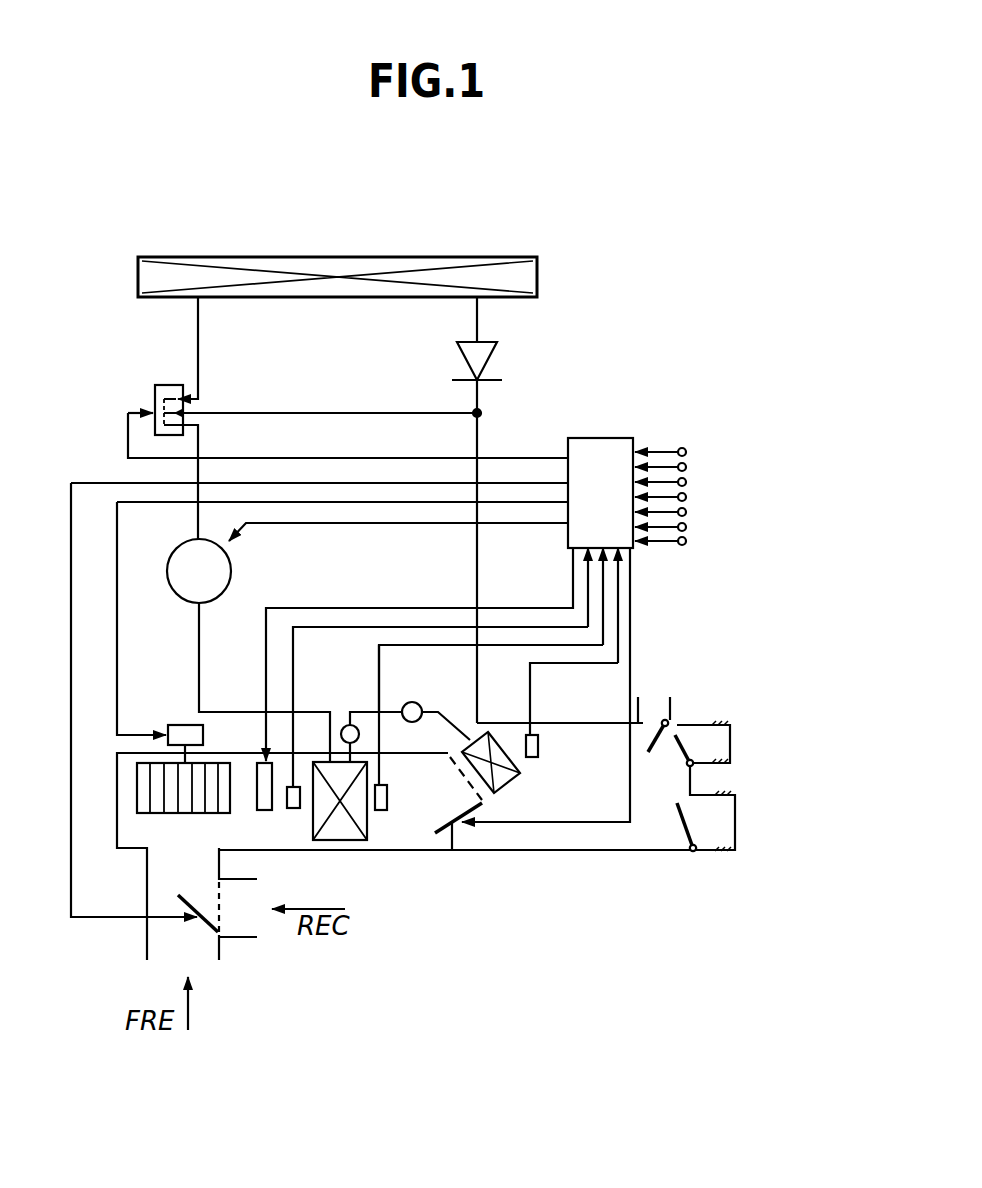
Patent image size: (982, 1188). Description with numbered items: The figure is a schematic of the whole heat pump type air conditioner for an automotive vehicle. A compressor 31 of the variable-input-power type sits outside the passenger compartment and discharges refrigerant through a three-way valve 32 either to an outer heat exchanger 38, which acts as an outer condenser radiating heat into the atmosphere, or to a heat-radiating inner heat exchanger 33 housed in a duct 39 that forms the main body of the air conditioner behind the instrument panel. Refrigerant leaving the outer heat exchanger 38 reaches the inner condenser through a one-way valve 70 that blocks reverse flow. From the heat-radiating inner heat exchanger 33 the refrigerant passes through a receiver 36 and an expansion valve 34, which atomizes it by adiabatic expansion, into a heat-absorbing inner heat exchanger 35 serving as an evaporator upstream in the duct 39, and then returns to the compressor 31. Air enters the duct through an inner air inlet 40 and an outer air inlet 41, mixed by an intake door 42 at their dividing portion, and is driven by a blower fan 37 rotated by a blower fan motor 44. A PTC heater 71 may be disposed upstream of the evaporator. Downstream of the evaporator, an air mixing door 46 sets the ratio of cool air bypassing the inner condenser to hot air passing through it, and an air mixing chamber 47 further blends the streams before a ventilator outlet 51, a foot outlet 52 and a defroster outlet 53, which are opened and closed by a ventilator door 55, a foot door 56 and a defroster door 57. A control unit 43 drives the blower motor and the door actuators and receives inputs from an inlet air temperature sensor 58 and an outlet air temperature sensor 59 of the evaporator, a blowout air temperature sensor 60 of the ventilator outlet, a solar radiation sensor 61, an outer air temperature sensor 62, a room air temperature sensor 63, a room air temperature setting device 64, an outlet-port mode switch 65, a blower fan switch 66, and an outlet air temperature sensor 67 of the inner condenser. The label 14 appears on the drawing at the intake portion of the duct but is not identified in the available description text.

The air duct 14 is at (147, 889).
The compressor 31 is at (231, 571).
The three-way valve 32 is at (162, 385).
The heat-radiating inner heat exchanger 33 is at (508, 783).
The expansion valve 34 is at (347, 724).
The heat-absorbing inner heat exchanger 35 is at (350, 840).
The receiver 36 is at (414, 702).
The blower fan 37 is at (182, 813).
The outer heat exchanger 38 is at (380, 257).
The duct 39 is at (574, 851).
The inner air inlet 40 is at (230, 908).
The outer air inlet 41 is at (168, 940).
The intake door 42 is at (204, 928).
The control unit 43 is at (596, 438).
The blower fan motor 44 is at (187, 725).
The air mixing door 46 is at (452, 851).
The air mixing chamber 47 is at (610, 735).
The ventilator outlet 51 is at (728, 820).
The foot outlet 52 is at (650, 710).
The defroster outlet 53 is at (725, 741).
The ventilator door 55 is at (688, 825).
The foot door 56 is at (660, 725).
The defroster door 57 is at (686, 740).
The inlet air temperature sensor 58 is at (293, 808).
The outlet air temperature sensor 59 is at (387, 796).
The blowout air temperature sensor 60 is at (686, 449).
The solar radiation sensor 61 is at (686, 465).
The outer air temperature sensor 62 is at (686, 480).
The room air temperature sensor 63 is at (686, 497).
The room air temperature setting device 64 is at (686, 513).
The outlet-port mode switch 65 is at (686, 529).
The blower fan switch 66 is at (685, 544).
The outlet air temperature sensor 67 is at (538, 747).
The one-way valve 70 is at (498, 362).
The PTC heater 71 is at (257, 782).